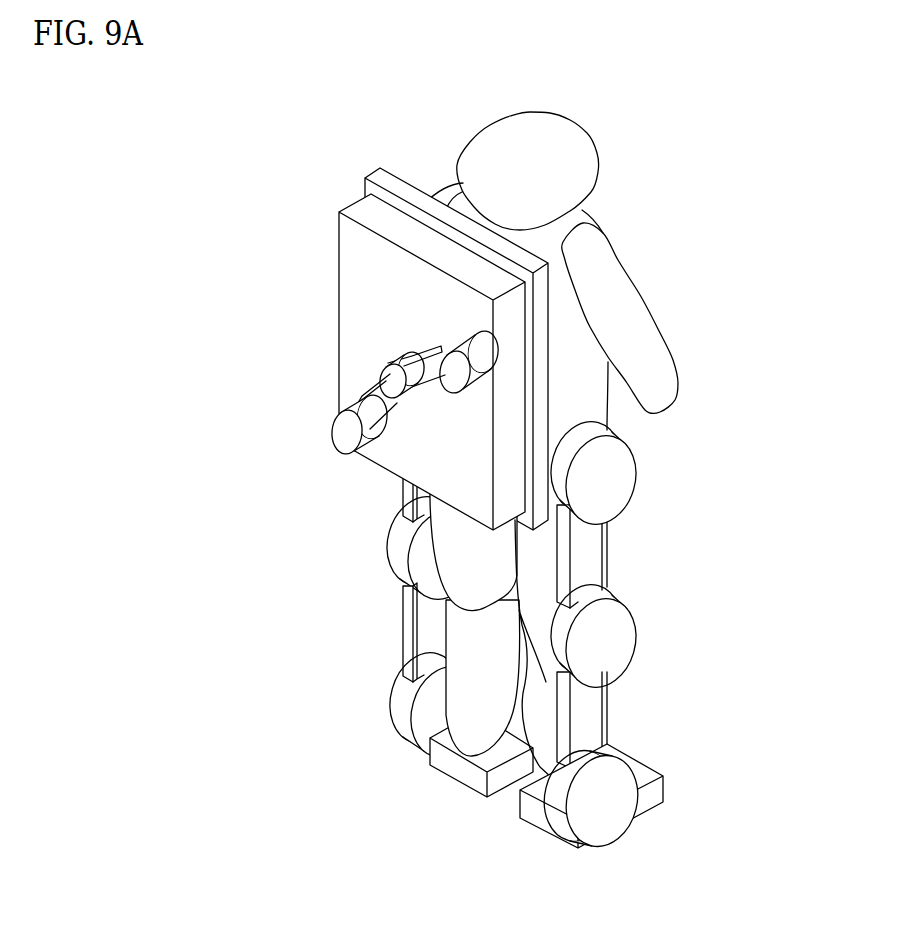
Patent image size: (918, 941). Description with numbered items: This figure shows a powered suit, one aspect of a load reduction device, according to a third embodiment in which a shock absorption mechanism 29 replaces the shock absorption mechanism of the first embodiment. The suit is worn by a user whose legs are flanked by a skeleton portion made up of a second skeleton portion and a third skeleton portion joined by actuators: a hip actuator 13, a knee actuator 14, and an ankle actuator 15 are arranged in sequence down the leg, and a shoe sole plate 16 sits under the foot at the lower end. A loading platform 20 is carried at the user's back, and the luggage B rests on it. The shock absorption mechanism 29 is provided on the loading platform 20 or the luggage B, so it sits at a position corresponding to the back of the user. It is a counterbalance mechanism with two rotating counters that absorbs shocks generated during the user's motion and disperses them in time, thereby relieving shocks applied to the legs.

The luggage B is at (360, 210).
The loading platform 20 is at (545, 337).
The shock absorption mechanism 29 is at (387, 380).
The hip actuator 13 is at (615, 482).
The knee actuator 14 is at (620, 647).
The shoe sole plate 16 is at (658, 794).
The ankle actuator 15 is at (610, 813).